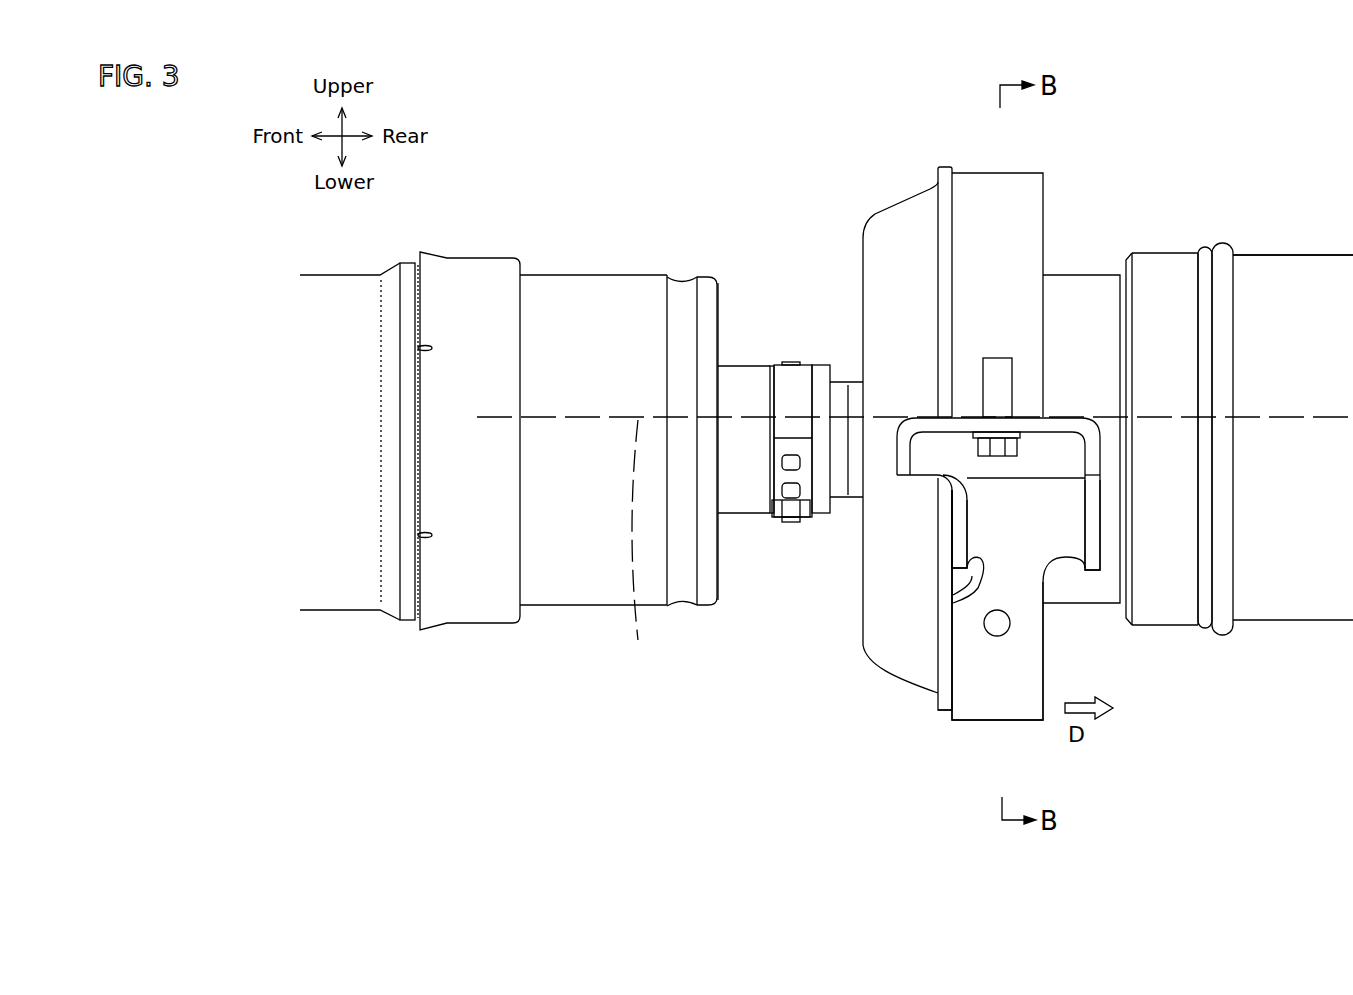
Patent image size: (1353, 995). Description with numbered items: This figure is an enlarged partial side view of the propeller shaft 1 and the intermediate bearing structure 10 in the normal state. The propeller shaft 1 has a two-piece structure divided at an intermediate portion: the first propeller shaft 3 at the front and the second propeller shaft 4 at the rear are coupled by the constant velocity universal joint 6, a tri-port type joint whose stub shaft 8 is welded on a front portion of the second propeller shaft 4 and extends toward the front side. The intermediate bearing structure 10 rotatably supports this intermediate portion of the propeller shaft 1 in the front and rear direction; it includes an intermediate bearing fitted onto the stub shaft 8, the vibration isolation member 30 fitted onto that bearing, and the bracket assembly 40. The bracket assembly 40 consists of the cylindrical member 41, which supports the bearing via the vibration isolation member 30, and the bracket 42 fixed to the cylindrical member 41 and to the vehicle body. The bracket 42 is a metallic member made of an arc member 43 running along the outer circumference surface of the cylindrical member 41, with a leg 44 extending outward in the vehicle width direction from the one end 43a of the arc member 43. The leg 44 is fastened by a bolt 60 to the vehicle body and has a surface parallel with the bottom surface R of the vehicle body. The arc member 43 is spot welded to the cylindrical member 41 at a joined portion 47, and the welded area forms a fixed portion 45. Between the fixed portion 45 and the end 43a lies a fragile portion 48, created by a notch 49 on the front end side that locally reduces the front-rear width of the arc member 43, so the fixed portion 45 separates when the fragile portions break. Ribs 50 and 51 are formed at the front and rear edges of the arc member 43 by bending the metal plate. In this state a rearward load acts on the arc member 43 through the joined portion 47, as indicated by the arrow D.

The propeller shaft 1 is at (1260, 135).
The first propeller shaft 3 is at (326, 292).
The second propeller shaft 4 is at (1303, 270).
The constant velocity universal joint 6 is at (550, 620).
The stub shaft 8 is at (860, 380).
The intermediate bearing structure 10 is at (1110, 182).
The vibration isolation member 30 is at (887, 220).
The bracket assembly 40 is at (938, 152).
The cylindrical member 41 is at (998, 185).
The bracket 42 is at (962, 704).
The arc member 43 is at (998, 695).
The fixed portion 45 is at (997, 605).
The one end of the arc member 43a is at (1030, 485).
The leg 44 is at (1027, 412).
The joined portion 47 is at (984, 624).
The fragile portion 48 is at (1015, 572).
The notch 49 is at (952, 583).
The rib 50 is at (961, 550).
The rib 51 is at (1092, 532).
The bolt 60 is at (998, 452).
The bottom surface of the vehicle body R is at (632, 547).